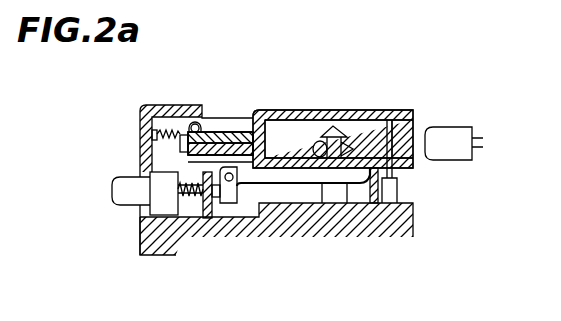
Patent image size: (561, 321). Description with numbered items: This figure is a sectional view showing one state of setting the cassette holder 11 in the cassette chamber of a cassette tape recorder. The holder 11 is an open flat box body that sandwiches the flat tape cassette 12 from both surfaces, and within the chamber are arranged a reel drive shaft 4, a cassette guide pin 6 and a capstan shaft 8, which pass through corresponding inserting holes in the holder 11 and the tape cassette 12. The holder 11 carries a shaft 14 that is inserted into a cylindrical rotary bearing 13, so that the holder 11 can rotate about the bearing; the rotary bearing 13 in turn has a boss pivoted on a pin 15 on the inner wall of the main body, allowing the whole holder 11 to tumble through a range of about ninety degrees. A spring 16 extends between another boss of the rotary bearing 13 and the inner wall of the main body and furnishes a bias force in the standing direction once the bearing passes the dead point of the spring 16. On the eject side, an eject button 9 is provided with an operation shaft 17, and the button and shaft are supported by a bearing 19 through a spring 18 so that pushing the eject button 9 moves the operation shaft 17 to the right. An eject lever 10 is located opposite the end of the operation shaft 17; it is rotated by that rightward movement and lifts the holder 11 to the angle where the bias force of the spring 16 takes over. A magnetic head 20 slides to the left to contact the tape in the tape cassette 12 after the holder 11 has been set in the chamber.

The reel drive shaft 4 is at (338, 186).
The cassette guide pin 6 is at (369, 194).
The capstan shaft 8 is at (396, 143).
The eject button 9 is at (124, 193).
The eject lever 10 is at (295, 175).
The holder 11 is at (337, 126).
The tape cassette 12 is at (369, 137).
The rotary bearing 13 is at (238, 130).
The shaft 14 is at (249, 132).
The pin 15 is at (198, 125).
The spring 16 is at (171, 131).
The operation shaft 17 is at (216, 190).
The spring 18 is at (196, 188).
The bearing 19 is at (206, 186).
The magnetic head 20 is at (454, 112).